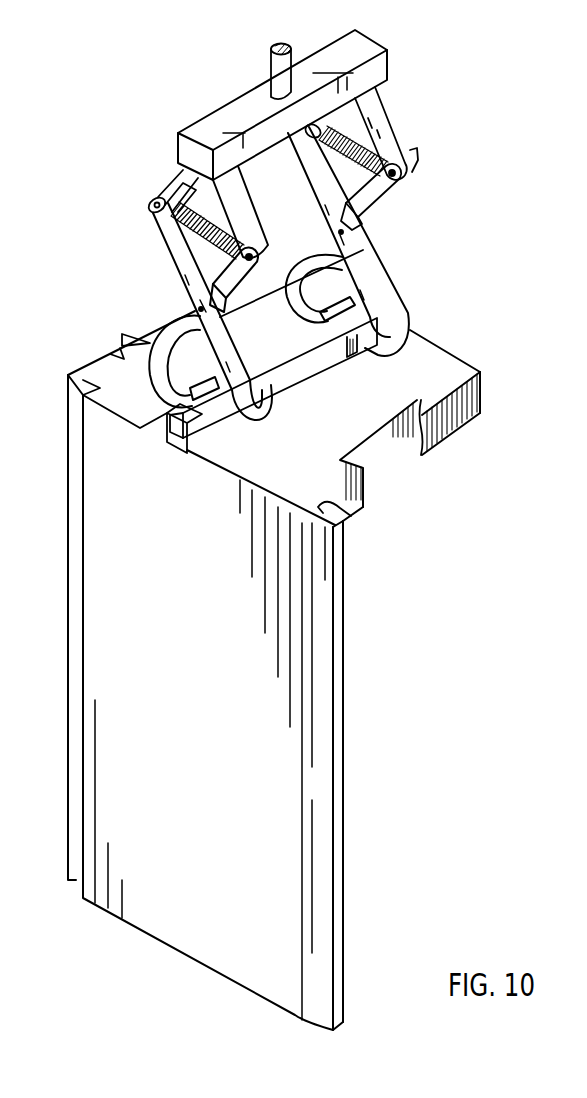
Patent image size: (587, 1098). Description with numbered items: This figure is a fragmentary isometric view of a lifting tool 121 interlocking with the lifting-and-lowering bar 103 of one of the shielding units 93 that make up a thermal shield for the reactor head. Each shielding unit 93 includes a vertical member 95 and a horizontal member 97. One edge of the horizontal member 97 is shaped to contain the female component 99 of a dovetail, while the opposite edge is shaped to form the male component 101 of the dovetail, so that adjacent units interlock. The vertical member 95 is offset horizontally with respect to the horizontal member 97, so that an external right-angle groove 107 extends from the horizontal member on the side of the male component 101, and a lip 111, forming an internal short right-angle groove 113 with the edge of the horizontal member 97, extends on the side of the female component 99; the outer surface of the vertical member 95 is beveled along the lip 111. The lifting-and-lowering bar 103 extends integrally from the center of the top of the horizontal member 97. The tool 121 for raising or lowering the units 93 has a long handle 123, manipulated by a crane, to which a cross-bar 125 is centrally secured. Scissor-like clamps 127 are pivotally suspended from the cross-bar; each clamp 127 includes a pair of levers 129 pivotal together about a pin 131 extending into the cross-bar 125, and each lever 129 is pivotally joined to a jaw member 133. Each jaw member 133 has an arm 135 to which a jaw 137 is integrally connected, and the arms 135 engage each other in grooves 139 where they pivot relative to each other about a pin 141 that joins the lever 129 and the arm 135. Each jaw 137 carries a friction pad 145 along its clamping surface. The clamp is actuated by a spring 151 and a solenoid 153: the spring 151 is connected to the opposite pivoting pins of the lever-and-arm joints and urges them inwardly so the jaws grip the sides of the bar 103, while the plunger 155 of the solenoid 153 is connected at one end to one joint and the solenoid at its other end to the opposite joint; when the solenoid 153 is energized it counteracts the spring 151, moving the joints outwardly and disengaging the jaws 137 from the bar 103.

The shielding unit 93 is at (347, 730).
The vertical member 95 is at (278, 866).
The horizontal member 97 is at (453, 367).
The female component of dovetail 99 is at (420, 432).
The male component of dovetail 101 is at (136, 334).
The lifting-and-lowering bar 103 is at (275, 360).
The external right-angle groove 107 is at (88, 387).
The lip 111 is at (340, 587).
The internal short right-angle groove 113 is at (350, 513).
The tool 121 is at (284, 211).
The handle 123 is at (283, 44).
The cross-bar 125 is at (368, 44).
The scissor-like clamp 127 is at (173, 293).
The lever 129 is at (182, 178).
The pin 131 is at (194, 162).
The jaw member 133 is at (410, 300).
The arm 135 is at (167, 238).
The jaw 137 is at (400, 343).
The groove 139 is at (347, 203).
The pin 141 is at (117, 354).
The friction pad 145 is at (181, 447).
The spring 151 is at (153, 214).
The solenoid 153 is at (333, 120).
The plunger 155 is at (183, 183).